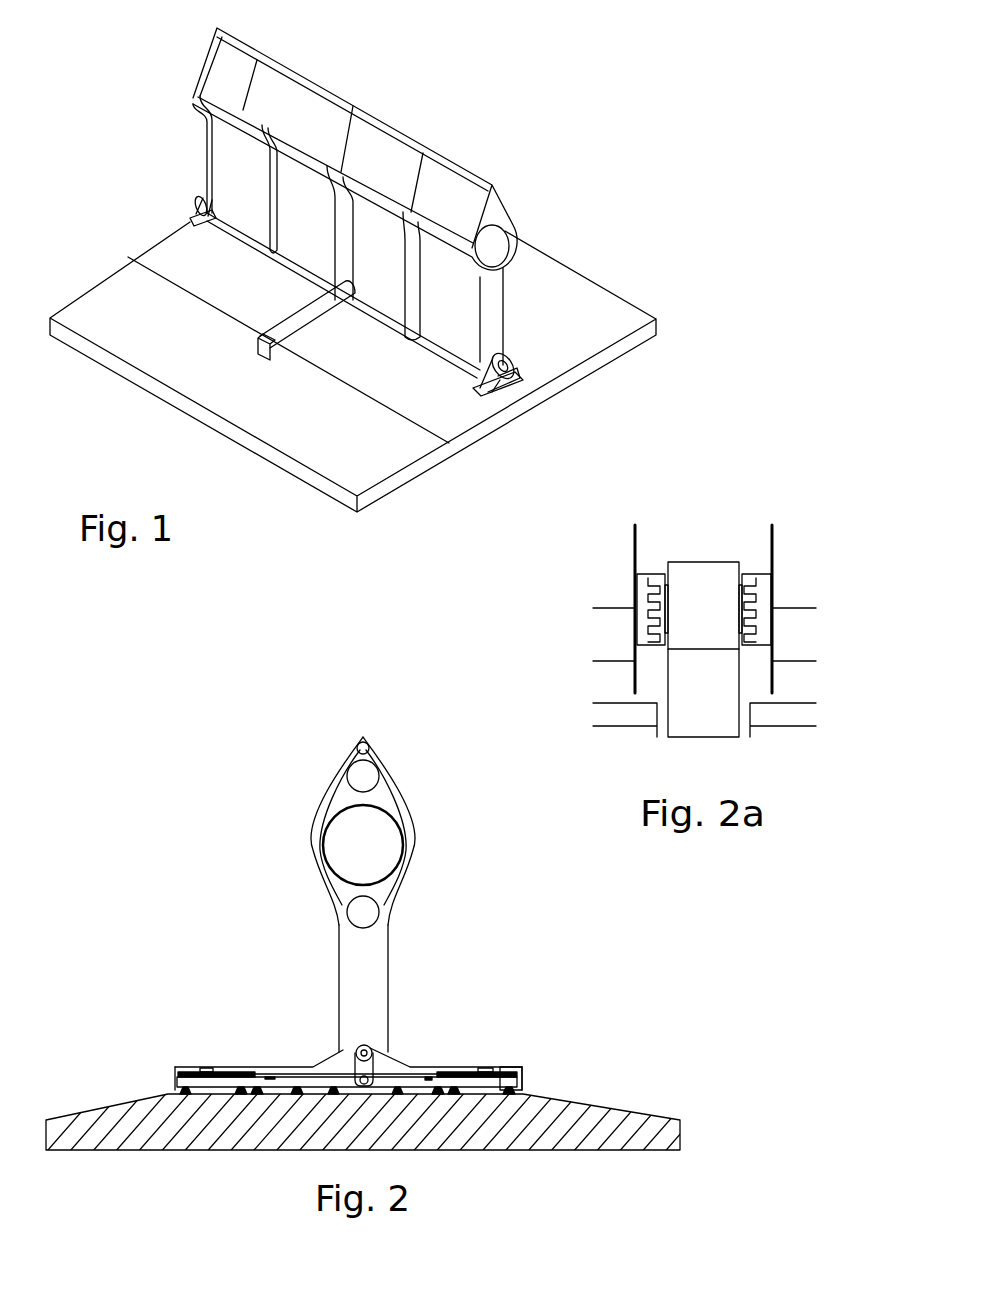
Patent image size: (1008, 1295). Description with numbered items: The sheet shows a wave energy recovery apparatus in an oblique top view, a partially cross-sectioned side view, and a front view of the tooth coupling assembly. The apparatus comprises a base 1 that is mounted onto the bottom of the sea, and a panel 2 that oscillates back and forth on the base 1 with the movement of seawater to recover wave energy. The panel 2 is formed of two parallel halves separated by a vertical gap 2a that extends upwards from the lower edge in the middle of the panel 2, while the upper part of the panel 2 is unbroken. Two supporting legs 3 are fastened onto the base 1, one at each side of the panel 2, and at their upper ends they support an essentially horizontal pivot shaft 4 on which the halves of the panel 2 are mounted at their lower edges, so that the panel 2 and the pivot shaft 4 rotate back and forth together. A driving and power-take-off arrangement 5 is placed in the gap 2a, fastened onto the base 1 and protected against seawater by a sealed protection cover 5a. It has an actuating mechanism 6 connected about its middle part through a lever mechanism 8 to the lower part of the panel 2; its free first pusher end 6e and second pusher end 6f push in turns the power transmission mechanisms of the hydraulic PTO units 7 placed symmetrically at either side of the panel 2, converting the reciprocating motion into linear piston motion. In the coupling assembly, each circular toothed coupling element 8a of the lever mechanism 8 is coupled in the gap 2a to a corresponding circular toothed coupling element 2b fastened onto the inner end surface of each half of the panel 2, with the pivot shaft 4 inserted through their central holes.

In FIG. 1, the base 1 is at (570, 278).
In FIG. 2A, the base 1 is at (606, 708).
In FIG. 2, the base 1 is at (92, 1118).
In FIG. 1, the panel 2 is at (355, 203).
In FIG. 2A, the panel 2 is at (636, 562).
In FIG. 2, the panel 2 is at (347, 769).
In FIG. 1, the vertical gap 2a is at (348, 262).
In FIG. 2A, the circular toothed coupling element 2b is at (645, 573).
In FIG. 1, the supporting leg 3 is at (198, 208).
In FIG. 1, the pivot shaft 4 is at (508, 377).
In FIG. 2, the pivot shaft 4 is at (363, 1046).
In FIG. 1, the driving and power-take-off (PTO) arrangement 5 is at (285, 345).
In FIG. 2, the driving and power-take-off (PTO) arrangement 5 is at (410, 993).
In FIG. 1, the sealed protection cover 5a is at (278, 352).
In FIG. 2A, the sealed protection cover 5a is at (705, 560).
In FIG. 2, the sealed protection cover 5a is at (505, 1066).
In FIG. 2, the actuating mechanism 6 is at (348, 1036).
In FIG. 2, the first pusher end 6e is at (262, 1068).
In FIG. 2, the second pusher end 6f is at (430, 1068).
In FIG. 2, the hydraulic PTO unit 7 is at (188, 1019).
In FIG. 2, the lever mechanism 8 is at (325, 1050).
In FIG. 2A, the circular coupling element 8a is at (748, 573).